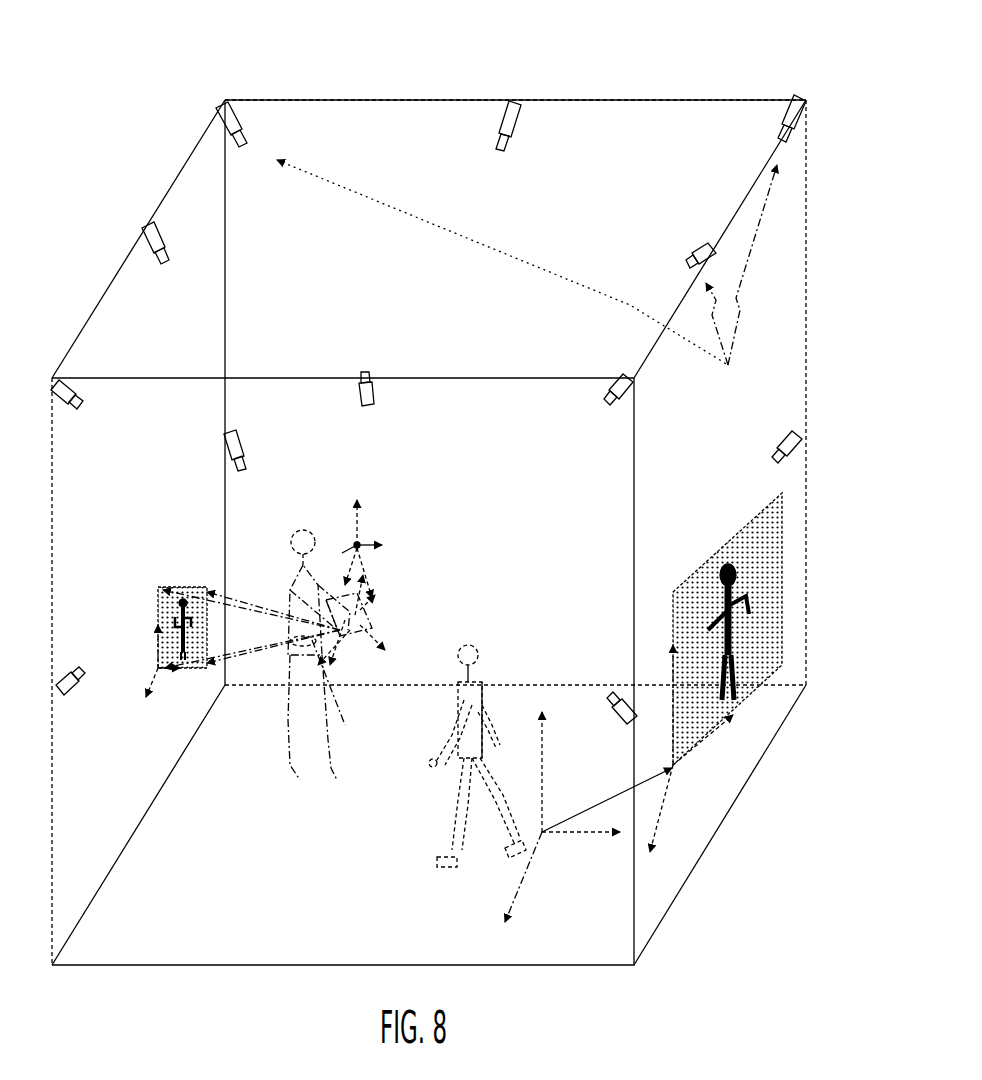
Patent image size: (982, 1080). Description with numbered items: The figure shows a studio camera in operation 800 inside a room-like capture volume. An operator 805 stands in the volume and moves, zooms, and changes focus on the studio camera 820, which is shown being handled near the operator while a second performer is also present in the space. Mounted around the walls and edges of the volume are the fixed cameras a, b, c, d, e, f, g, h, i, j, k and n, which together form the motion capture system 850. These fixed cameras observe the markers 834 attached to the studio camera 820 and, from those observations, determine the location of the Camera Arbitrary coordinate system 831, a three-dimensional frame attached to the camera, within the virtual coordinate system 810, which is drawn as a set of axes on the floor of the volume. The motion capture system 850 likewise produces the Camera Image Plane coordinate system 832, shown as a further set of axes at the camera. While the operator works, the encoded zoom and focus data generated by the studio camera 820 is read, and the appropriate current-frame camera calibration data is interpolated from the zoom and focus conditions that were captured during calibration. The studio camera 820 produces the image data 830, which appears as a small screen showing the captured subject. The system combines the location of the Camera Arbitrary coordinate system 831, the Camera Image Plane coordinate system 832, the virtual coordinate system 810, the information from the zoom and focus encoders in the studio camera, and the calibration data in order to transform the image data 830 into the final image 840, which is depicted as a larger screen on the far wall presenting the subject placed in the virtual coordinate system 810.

The studio camera in operation 800 is at (358, 82).
The operator 805 is at (282, 565).
The virtual coordinate system 810 is at (548, 840).
The studio camera 820 is at (443, 756).
The image data 830 is at (153, 591).
The Camera Arbitrary coordinate system 831 is at (371, 530).
The Camera Image Plane coordinate system 832 is at (378, 628).
The markers 834 is at (352, 536).
The final image 840 is at (697, 558).
The motion capture system 850 is at (650, 368).
The fixed camera a is at (615, 414).
The fixed camera b is at (701, 229).
The fixed camera c is at (784, 118).
The fixed camera d is at (499, 126).
The fixed camera e is at (242, 124).
The fixed camera f is at (155, 259).
The fixed camera g is at (67, 418).
The fixed camera h is at (73, 696).
The fixed camera i is at (239, 434).
The fixed camera j is at (382, 399).
The fixed camera k is at (622, 719).
The fixed camera n is at (787, 422).